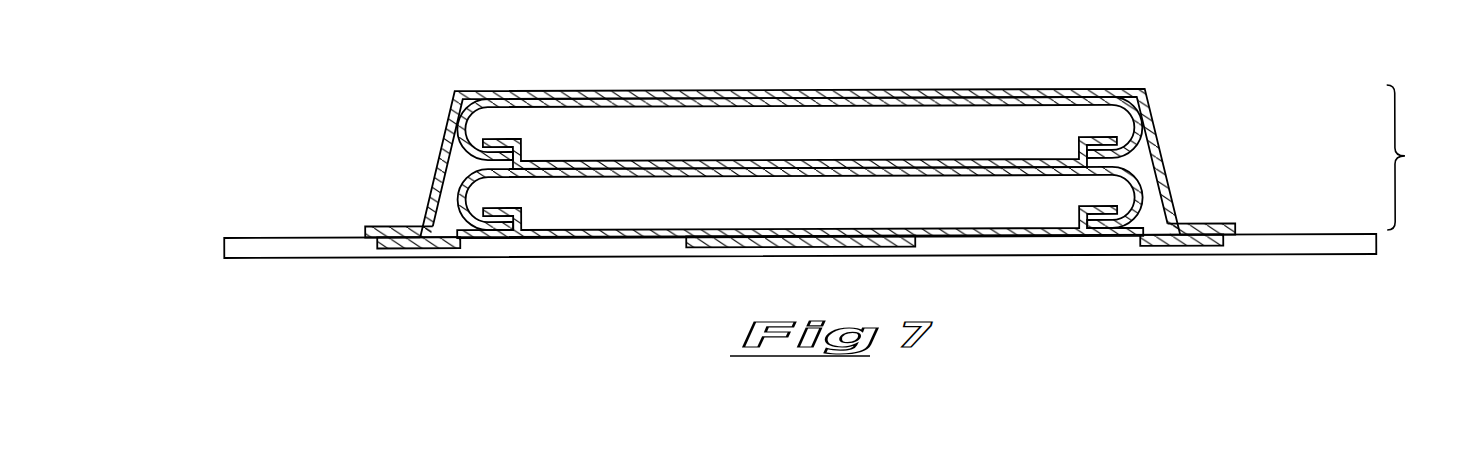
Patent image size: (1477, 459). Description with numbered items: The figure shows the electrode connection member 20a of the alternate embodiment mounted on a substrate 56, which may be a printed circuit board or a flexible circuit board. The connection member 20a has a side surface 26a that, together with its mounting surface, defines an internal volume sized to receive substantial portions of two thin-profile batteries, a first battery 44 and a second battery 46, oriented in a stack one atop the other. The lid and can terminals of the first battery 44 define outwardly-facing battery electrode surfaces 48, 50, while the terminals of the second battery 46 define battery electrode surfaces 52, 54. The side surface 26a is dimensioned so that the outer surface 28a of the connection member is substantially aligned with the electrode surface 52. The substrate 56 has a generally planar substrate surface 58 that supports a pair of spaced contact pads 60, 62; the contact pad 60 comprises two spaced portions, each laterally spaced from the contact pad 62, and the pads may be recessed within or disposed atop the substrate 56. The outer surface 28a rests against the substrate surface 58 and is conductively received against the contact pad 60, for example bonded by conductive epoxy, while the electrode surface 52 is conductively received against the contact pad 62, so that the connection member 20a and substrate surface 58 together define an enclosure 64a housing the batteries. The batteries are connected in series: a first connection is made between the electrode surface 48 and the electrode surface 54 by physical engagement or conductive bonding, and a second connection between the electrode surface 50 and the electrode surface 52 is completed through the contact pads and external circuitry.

The connection member 20a is at (413, 68).
The side surface 26a is at (446, 198).
The outer surface 28a is at (401, 247).
The first battery 44 is at (821, 97).
The second battery 46 is at (972, 161).
The battery electrode surface 48 is at (822, 170).
The battery electrode surface 50 is at (990, 98).
The battery electrode surface 52 is at (993, 243).
The battery electrode surface 54 is at (673, 163).
The substrate 56 is at (270, 250).
The substrate surface 58 is at (305, 236).
The contact pad 60 is at (426, 250).
The contact pad 62 is at (725, 250).
The enclosure 64a is at (1457, 179).